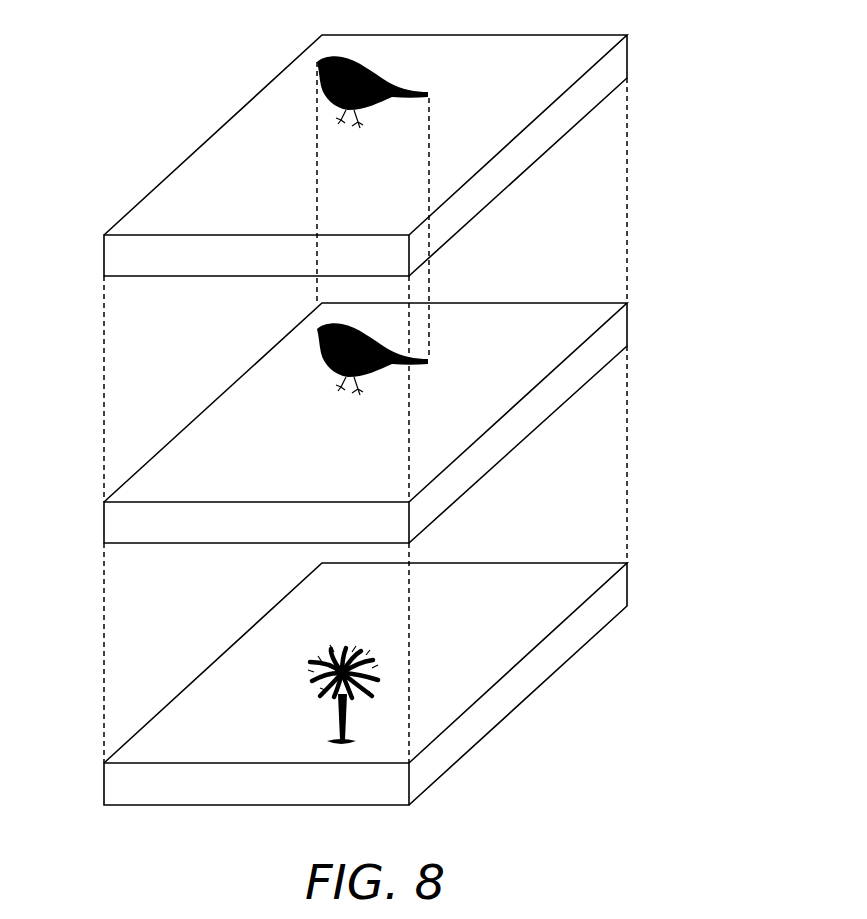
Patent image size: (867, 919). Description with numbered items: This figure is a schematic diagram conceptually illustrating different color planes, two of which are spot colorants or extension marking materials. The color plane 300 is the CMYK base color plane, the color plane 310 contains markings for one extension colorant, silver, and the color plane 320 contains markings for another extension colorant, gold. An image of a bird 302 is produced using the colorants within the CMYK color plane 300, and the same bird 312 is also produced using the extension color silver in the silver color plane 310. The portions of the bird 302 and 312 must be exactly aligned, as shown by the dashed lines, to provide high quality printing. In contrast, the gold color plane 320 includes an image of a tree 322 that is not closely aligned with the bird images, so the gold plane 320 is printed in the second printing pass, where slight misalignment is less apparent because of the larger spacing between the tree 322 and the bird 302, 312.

The CMYK base color plane 300 is at (231, 116).
The image of a bird 302 is at (430, 93).
The silver color plane 310 is at (249, 368).
The image of a bird 312 is at (430, 361).
The gold color plane 320 is at (258, 624).
The image of a tree 322 is at (380, 677).